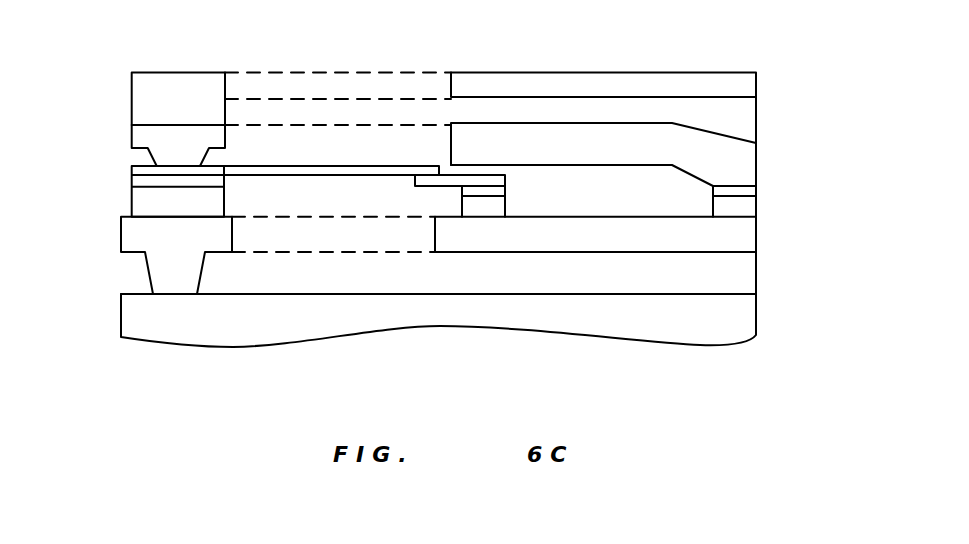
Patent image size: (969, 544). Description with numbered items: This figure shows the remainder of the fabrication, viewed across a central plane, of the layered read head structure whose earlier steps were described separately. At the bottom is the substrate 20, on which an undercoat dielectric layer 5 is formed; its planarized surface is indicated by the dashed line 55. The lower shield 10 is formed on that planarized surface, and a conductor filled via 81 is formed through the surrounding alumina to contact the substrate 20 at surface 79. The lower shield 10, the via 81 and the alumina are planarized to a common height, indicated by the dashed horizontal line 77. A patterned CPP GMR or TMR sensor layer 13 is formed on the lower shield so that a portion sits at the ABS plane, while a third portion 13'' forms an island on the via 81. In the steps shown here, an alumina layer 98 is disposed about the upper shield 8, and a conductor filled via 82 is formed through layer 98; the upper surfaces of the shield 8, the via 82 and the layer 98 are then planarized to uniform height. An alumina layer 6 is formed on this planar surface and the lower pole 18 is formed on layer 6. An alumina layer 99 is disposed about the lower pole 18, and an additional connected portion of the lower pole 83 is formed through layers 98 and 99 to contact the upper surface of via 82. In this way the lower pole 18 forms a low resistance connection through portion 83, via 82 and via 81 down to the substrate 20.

The lower pole 18 is at (740, 78).
The alumina layer 6 is at (740, 118).
The upper shield 8 is at (745, 165).
The CPP GMR or TMR sensor layer 13 is at (758, 201).
The lower shield 10 is at (737, 233).
The undercoat dielectric layer 5 is at (740, 276).
The substrate 20 is at (735, 308).
The additional connected portion of the lower pole 83 is at (142, 99).
The conductor filled via 82 is at (142, 138).
The alumina layer 98 is at (270, 143).
The alumina layer 99 is at (329, 88).
The third portion of the sensor layer 13'' is at (289, 191).
The conductor filled via 81 is at (142, 227).
The contact surface 79 is at (181, 294).
The planarized surface 55 is at (262, 253).
The planarized height line 77 is at (312, 217).